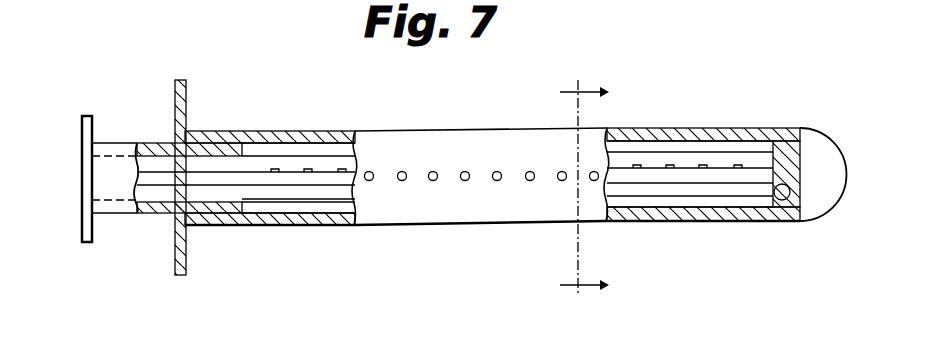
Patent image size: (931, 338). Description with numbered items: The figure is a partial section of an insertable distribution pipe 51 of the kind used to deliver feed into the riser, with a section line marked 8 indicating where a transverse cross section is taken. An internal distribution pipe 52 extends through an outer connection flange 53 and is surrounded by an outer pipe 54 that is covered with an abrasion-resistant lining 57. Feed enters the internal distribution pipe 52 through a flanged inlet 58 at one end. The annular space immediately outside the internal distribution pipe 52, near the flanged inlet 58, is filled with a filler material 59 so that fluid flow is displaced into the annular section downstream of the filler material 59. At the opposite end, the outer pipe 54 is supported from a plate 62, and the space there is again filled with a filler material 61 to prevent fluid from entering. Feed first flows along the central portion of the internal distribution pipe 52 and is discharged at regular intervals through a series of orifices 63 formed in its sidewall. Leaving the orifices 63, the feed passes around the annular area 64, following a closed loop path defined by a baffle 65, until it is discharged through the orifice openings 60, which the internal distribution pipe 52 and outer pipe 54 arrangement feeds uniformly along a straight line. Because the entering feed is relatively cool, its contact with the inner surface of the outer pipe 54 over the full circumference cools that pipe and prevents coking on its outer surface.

The insertable distribution pipe 51 is at (396, 111).
The internal distribution pipe 52 is at (680, 202).
The outer connection flange 53 is at (187, 99).
The outer pipe 54 is at (709, 128).
The abrasion-resistant lining 57 is at (645, 104).
The flanged inlet 58 is at (93, 226).
The filler material 59 is at (214, 210).
The orifice openings 60 is at (482, 195).
The filler material 61 is at (783, 130).
The plate 62 is at (783, 205).
The orifices 63 is at (342, 170).
The annular area 64 is at (642, 205).
The baffle 65 is at (306, 179).
The section line 8- 8 is at (581, 185).